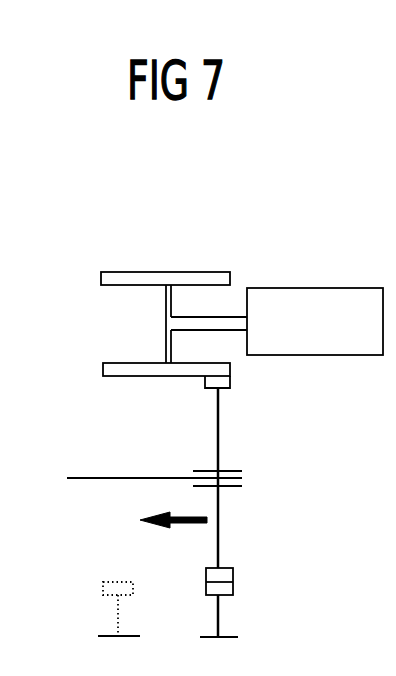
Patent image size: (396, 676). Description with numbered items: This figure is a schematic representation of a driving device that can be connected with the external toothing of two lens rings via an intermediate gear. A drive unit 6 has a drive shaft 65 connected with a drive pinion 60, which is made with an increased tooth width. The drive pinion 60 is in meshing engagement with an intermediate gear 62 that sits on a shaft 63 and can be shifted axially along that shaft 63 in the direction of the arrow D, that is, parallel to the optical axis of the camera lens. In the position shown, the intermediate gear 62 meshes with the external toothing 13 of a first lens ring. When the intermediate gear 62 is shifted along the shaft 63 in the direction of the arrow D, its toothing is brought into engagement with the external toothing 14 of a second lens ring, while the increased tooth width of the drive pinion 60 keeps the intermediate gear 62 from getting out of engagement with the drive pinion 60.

The drive unit 6 is at (340, 298).
The external toothing of a first lens ring 13 is at (233, 587).
The external toothing of a second lens ring 14 is at (103, 590).
The drive pinion 60 is at (148, 278).
The intermediate gear 62 is at (219, 423).
The shaft 63 is at (85, 477).
The drive shaft 65 is at (227, 323).
The arrow D is at (180, 526).